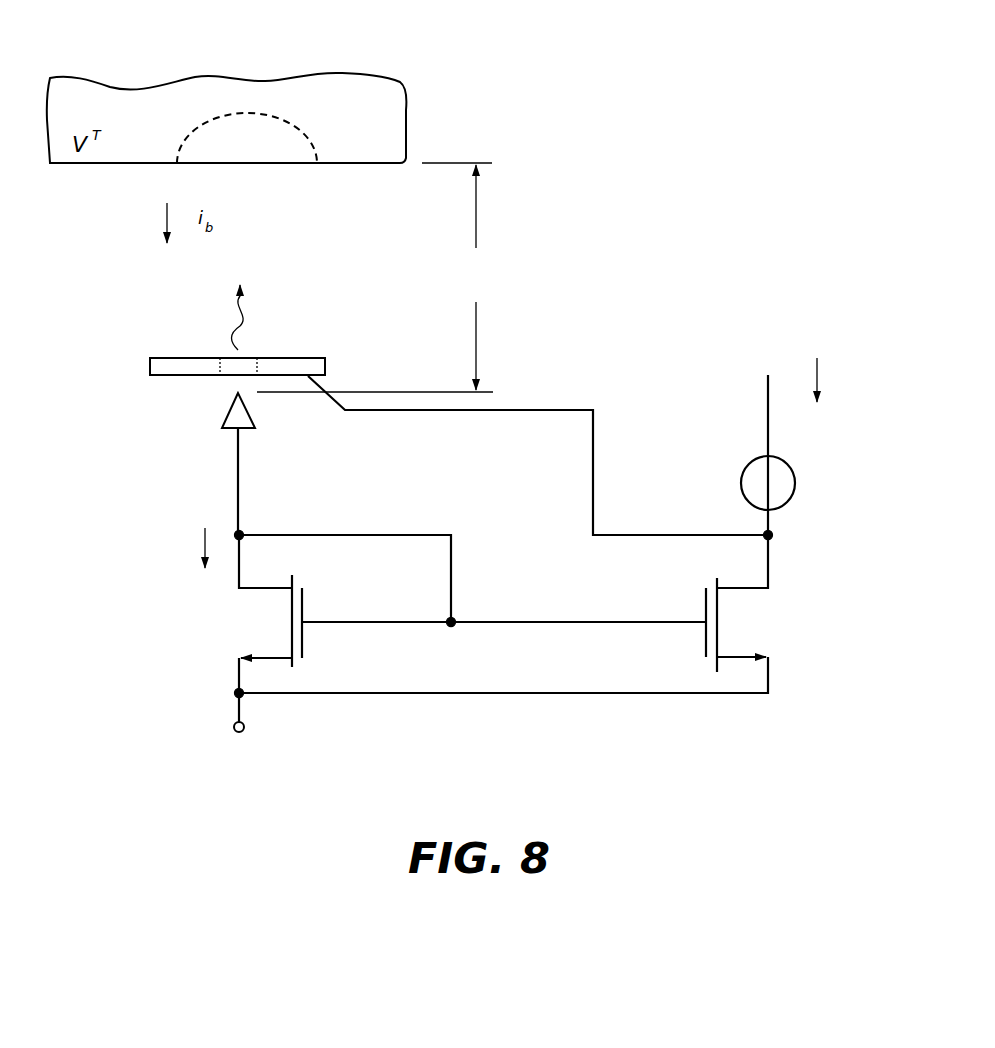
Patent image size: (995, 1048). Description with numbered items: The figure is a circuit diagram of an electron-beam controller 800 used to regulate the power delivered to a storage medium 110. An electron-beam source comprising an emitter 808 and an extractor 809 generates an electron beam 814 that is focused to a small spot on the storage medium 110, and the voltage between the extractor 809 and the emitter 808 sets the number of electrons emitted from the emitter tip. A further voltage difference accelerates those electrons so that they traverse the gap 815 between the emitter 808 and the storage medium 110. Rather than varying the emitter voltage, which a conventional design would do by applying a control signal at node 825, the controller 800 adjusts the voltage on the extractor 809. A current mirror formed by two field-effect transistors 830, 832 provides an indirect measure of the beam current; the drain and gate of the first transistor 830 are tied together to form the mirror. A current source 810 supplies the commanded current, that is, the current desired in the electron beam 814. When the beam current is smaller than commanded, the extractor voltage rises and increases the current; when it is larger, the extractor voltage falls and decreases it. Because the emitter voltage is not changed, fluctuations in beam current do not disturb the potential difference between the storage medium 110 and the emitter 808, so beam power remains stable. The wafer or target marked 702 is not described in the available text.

The storage medium 110 is at (267, 88).
The wafer / target substrate 702 is at (363, 76).
The electron-beam controller 800 is at (505, 482).
The emitter 808 is at (223, 423).
The extractor 809 is at (295, 357).
The current source 810 is at (753, 458).
The electron beam 814 is at (245, 317).
The gap 815 is at (377, 277).
The node 825 is at (770, 530).
The field-effect transistor 830 is at (258, 588).
The field-effect transistor 832 is at (740, 583).